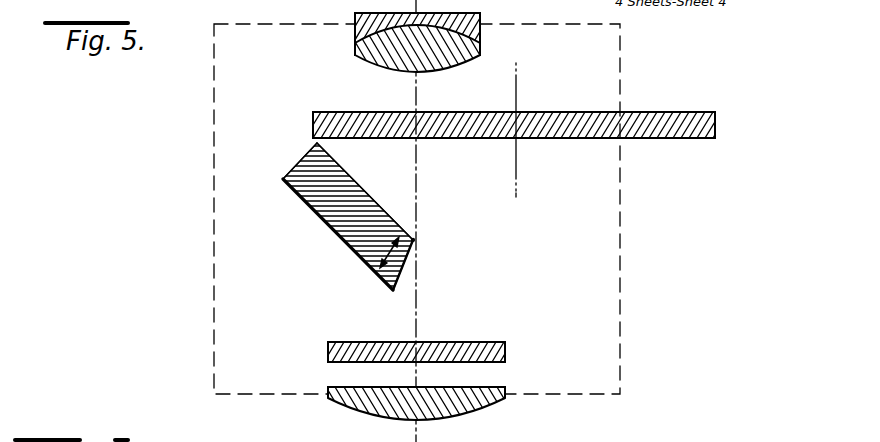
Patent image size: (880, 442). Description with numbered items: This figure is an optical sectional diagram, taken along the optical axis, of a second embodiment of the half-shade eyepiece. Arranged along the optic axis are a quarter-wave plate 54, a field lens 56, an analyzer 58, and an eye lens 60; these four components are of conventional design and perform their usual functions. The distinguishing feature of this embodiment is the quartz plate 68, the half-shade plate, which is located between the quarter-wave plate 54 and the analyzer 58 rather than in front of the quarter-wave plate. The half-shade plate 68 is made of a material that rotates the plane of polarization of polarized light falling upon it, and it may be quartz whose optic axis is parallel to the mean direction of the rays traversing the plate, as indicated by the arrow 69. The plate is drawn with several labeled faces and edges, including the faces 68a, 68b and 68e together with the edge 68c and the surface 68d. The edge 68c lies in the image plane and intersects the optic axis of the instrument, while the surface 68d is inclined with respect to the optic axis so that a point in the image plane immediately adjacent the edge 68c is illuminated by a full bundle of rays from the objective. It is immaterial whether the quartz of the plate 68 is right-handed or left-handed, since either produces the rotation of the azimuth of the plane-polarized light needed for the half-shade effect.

The quarter-wave plate 54 is at (487, 342).
The field lens 56 is at (500, 387).
The analyzer 58 is at (669, 112).
The eye lens 60 is at (355, 47).
The quartz plate 68 is at (313, 178).
The prism face 68a is at (318, 219).
The prism face 68b is at (363, 192).
The edge 68c is at (413, 240).
The surface 68d is at (408, 266).
The prism face 68e is at (393, 292).
The arrow 69 is at (387, 248).